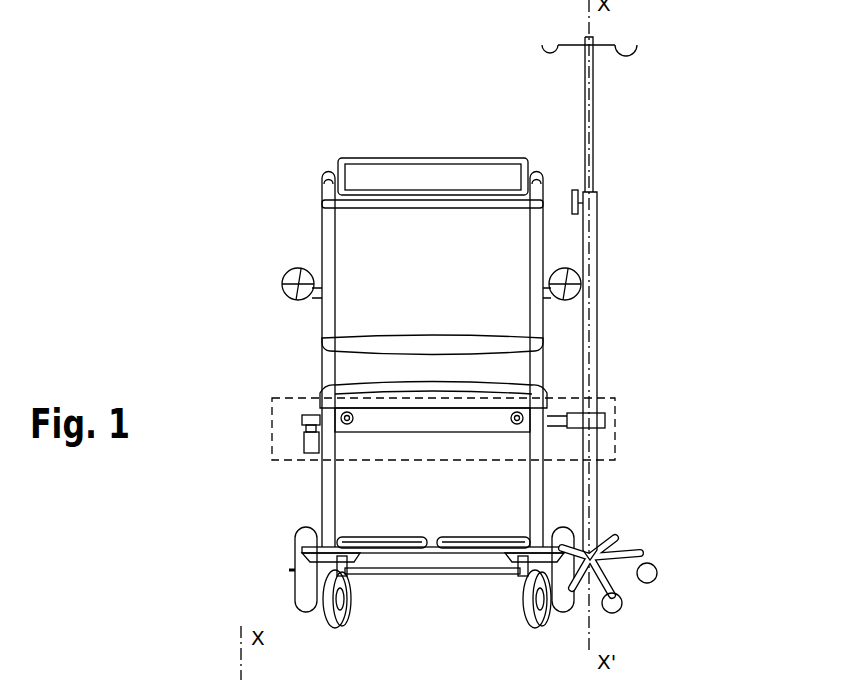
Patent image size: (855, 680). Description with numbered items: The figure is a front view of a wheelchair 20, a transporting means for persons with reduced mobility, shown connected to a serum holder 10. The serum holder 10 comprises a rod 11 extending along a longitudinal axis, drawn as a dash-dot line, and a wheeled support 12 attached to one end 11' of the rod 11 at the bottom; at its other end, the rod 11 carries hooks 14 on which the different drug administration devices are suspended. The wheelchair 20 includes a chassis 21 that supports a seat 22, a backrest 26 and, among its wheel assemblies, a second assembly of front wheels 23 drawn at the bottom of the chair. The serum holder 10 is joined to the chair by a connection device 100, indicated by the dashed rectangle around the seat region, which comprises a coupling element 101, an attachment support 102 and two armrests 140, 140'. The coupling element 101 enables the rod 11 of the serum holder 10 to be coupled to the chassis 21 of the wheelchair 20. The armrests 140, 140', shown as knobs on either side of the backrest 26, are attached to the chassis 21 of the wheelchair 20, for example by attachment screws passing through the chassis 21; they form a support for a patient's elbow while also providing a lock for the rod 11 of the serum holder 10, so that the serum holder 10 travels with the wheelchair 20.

The serum holder 10 is at (611, 312).
The rod 11 is at (549, 125).
The end of rod 11' is at (633, 376).
The wheeled support 12 is at (642, 558).
The hooks 14 is at (612, 45).
The wheelchair 20 is at (297, 176).
The chassis 21 is at (318, 440).
The seat 22 is at (536, 385).
The second assembly of front wheels 23 is at (358, 612).
The backrest 26 is at (352, 222).
The connection device 100 is at (627, 448).
The coupling element 101 is at (310, 414).
The attachment support 102 is at (428, 415).
The armrest 140 is at (264, 289).
The armrest 140' is at (606, 287).